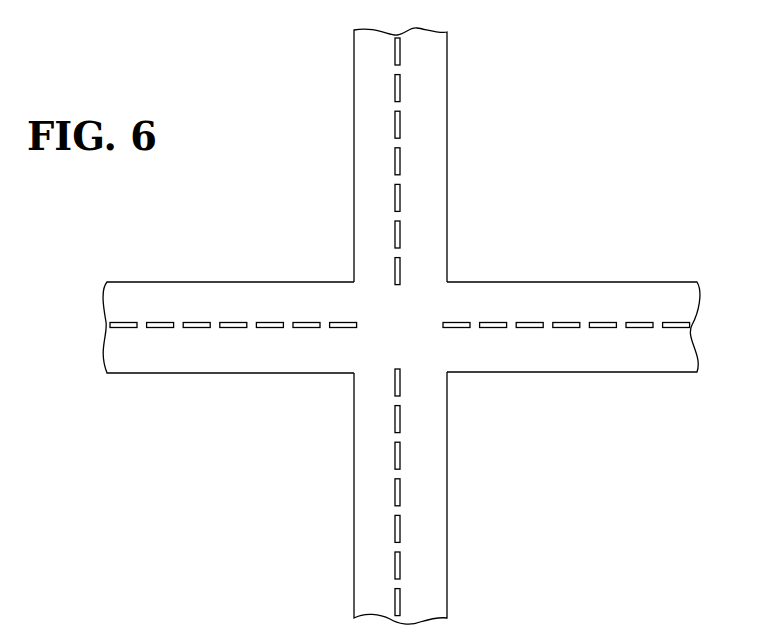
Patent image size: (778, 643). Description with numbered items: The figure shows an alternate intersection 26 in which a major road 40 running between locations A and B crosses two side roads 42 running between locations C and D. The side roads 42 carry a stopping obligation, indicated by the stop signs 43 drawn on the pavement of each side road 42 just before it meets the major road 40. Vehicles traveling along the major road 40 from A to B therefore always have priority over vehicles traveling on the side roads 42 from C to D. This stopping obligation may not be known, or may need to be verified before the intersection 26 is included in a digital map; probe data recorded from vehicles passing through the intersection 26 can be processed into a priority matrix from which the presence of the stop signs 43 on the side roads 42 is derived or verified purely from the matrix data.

The intersection 26 is at (600, 184).
The major road 40 is at (422, 103).
The side roads 42 is at (228, 363).
The stop signs 43 is at (454, 282).